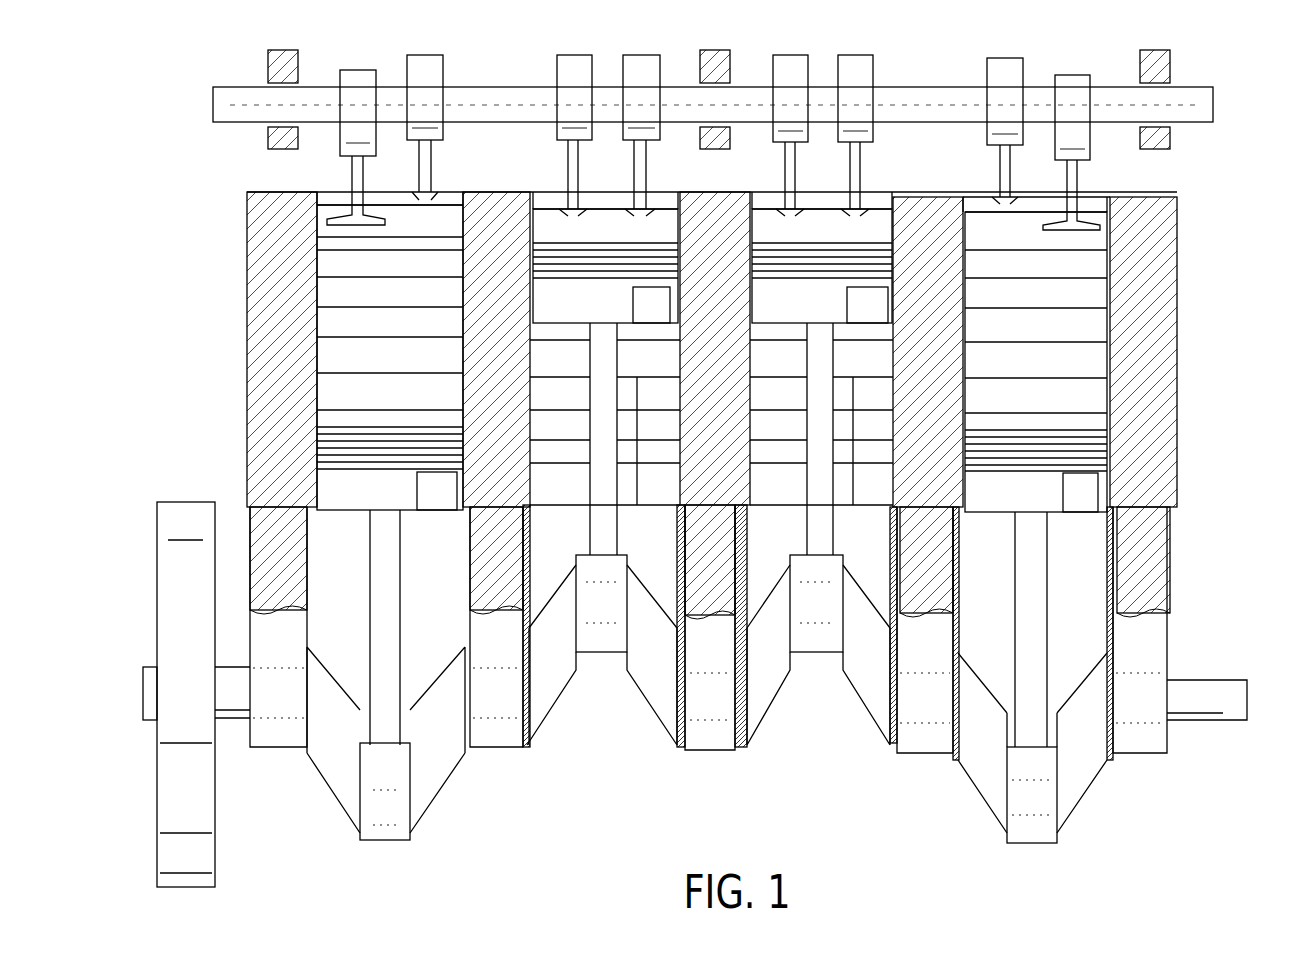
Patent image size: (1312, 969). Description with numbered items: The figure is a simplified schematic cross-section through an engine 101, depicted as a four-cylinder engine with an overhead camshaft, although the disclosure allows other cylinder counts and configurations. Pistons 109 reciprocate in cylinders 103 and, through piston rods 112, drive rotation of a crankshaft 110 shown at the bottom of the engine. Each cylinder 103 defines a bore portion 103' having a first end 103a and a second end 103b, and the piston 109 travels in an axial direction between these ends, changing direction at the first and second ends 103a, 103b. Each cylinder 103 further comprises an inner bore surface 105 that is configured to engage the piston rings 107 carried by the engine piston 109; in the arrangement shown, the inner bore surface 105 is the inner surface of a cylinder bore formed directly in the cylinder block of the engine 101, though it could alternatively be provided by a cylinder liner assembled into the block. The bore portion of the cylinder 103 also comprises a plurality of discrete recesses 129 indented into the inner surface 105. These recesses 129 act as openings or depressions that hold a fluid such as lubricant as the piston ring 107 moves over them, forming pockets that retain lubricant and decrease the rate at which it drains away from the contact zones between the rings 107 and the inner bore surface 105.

The engine 101 is at (1247, 173).
The cylinder 103 is at (738, 315).
The bore portion 103' is at (709, 435).
The first end 103a is at (663, 505).
The second end 103b is at (300, 212).
The inner bore surface 105 is at (770, 230).
The piston ring 107 is at (330, 450).
The piston 109 is at (605, 245).
The crankshaft 110 is at (150, 675).
The piston rod 112 is at (395, 612).
The recess 129 is at (360, 272).